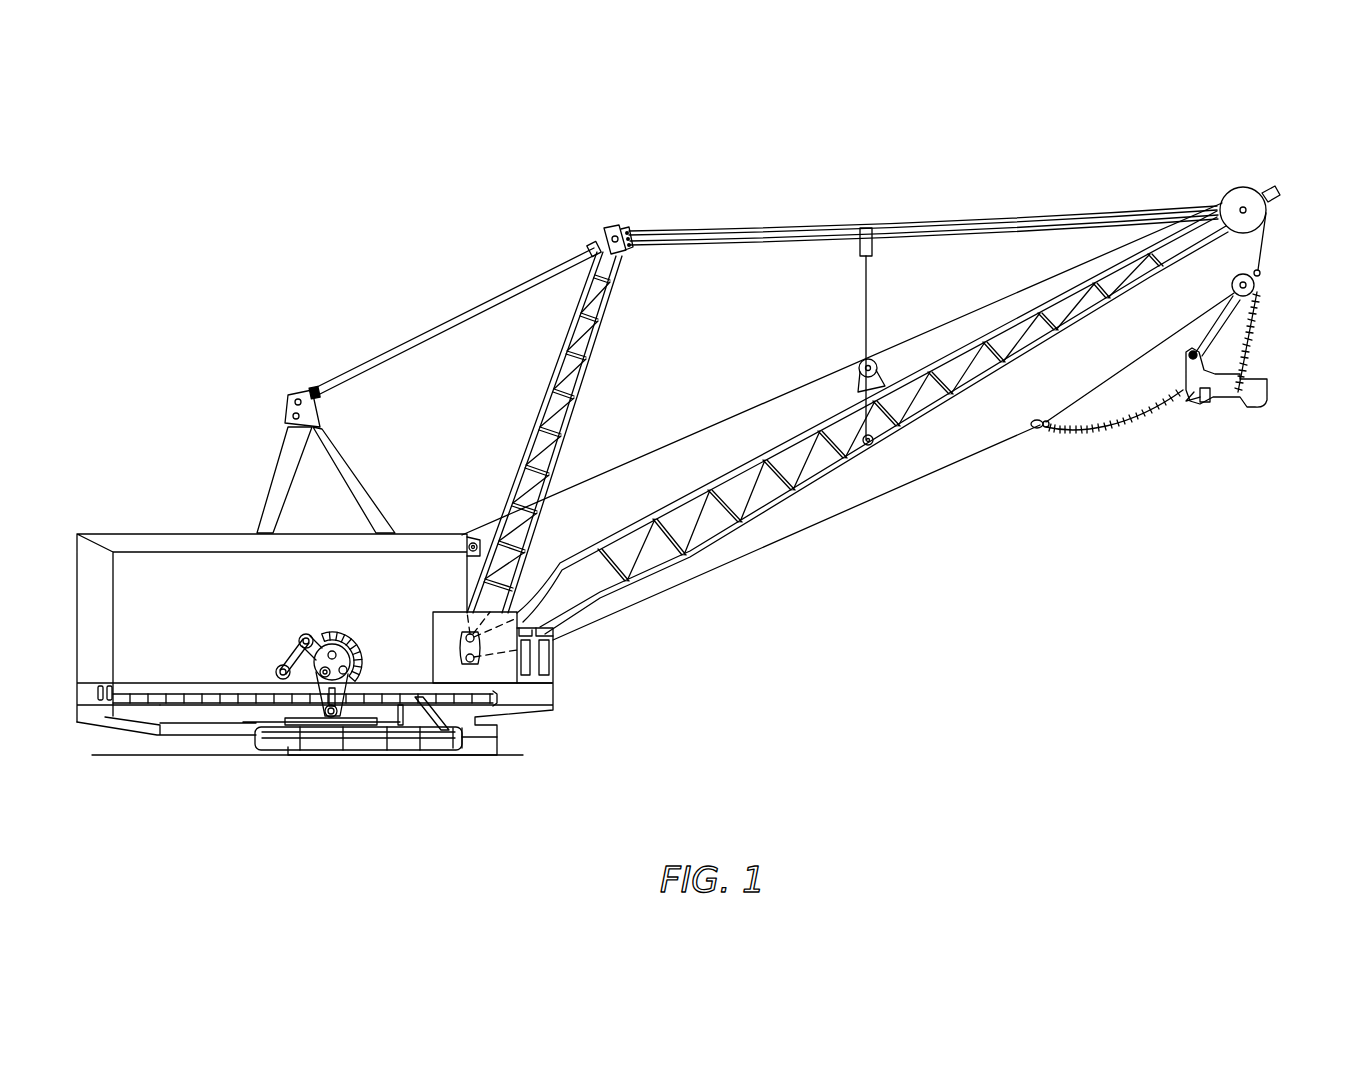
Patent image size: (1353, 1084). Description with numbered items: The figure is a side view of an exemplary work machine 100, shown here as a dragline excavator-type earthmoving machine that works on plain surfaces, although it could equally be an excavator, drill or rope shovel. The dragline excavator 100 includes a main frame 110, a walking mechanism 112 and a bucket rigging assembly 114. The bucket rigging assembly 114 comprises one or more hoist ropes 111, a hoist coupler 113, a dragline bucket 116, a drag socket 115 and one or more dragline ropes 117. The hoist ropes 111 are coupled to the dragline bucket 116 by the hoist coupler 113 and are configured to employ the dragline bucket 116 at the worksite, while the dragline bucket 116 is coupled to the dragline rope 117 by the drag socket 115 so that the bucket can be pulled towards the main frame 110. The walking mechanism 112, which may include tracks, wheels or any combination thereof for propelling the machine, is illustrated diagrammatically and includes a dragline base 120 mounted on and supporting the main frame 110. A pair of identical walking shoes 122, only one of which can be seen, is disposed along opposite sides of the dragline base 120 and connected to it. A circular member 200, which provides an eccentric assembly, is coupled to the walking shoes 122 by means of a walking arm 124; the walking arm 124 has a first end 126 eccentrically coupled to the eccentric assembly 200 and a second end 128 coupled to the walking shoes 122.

The work machine 100 is at (711, 470).
The main frame 110 is at (505, 664).
The hoist ropes 111 is at (770, 402).
The walking mechanism 112 is at (350, 782).
The hoist coupler 113 is at (1258, 278).
The bucket rigging assembly 114 is at (1293, 240).
The drag socket 115 is at (1040, 430).
The dragline bucket 116 is at (1258, 396).
The dragline ropes 117 is at (836, 512).
The dragline base 120 is at (493, 748).
The walking shoes 122 is at (256, 734).
The walking arm 124 is at (350, 637).
The first end 126 is at (333, 636).
The second end 128 is at (372, 724).
The circular member 200 is at (362, 656).